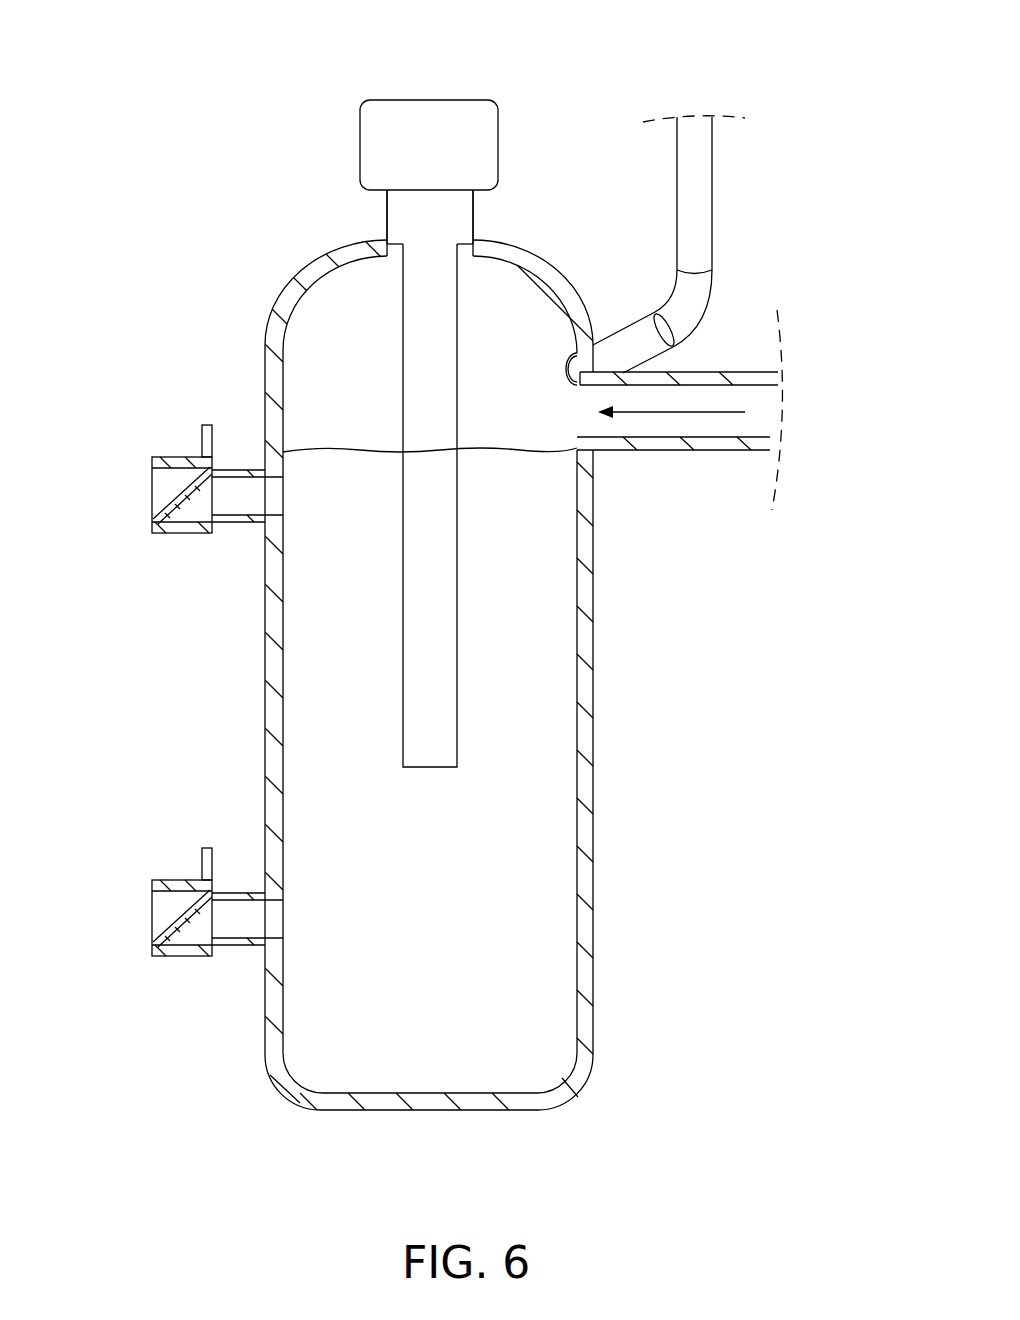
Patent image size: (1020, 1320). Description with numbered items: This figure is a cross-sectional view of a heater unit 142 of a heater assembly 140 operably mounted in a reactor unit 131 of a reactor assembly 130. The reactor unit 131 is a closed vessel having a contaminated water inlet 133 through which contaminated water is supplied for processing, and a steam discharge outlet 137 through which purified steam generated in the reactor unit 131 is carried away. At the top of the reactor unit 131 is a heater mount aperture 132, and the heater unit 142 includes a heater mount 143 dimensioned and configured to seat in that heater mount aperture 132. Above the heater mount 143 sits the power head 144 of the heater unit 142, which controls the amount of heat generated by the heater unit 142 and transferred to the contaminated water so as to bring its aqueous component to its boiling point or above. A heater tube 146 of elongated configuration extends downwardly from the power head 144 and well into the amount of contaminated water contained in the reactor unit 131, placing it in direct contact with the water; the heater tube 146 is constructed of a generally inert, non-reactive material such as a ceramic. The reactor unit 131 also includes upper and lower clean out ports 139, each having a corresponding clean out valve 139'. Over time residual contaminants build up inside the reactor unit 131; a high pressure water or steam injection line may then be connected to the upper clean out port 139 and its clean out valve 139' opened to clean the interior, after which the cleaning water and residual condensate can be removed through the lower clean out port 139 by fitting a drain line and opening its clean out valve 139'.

The reactor assembly 130 is at (662, 691).
The reactor unit 131 is at (593, 590).
The heater mount aperture 132 is at (397, 257).
The contaminated water inlet 133 is at (705, 451).
The steam discharge outlet 137 is at (712, 202).
The clean out port 139 is at (220, 749).
The clean out valve 139' is at (141, 683).
The heater assembly 140 is at (294, 118).
The heater unit 142 is at (430, 100).
The heater mount 143 is at (473, 217).
The power head 144 is at (498, 143).
The heater tube 146 is at (457, 620).